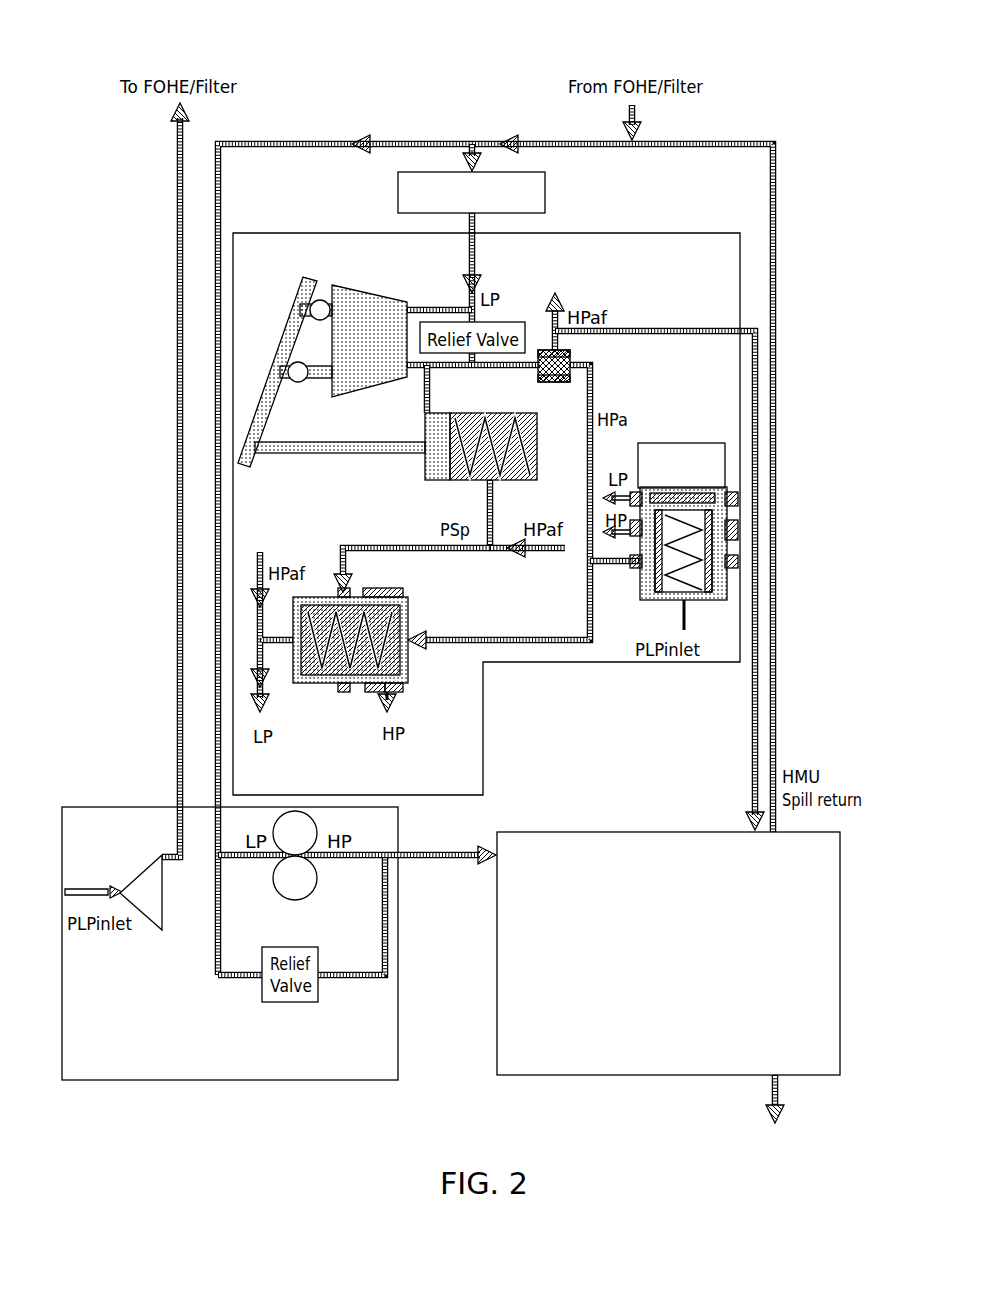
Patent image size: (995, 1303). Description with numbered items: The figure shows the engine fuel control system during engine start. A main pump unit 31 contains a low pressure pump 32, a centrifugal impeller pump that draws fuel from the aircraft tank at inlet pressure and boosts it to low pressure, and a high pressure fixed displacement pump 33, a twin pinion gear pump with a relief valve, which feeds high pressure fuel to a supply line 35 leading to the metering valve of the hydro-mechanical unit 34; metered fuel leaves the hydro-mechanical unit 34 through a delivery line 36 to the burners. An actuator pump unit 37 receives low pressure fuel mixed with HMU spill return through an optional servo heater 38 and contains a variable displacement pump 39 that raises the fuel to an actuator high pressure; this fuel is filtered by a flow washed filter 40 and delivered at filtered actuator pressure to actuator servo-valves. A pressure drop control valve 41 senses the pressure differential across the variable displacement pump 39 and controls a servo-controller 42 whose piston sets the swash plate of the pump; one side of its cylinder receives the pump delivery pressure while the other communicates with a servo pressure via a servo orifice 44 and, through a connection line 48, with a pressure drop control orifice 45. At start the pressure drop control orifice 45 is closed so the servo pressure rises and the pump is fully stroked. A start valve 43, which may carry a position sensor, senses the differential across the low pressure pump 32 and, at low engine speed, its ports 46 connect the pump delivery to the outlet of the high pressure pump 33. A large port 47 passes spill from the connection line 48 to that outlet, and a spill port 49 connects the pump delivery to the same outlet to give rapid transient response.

The main pump unit 31 is at (100, 805).
The low pressure pump 32 is at (162, 918).
The high pressure fixed displacement pump 33 is at (310, 897).
The hydro-mechanical unit 34 is at (600, 829).
The supply line 35 is at (415, 851).
The delivery line 36 is at (772, 1085).
The actuator pump unit 37 is at (645, 232).
The servo heater 38 is at (545, 184).
The variable displacement pump 39 is at (360, 284).
The flow washed filter 40 is at (553, 385).
The pressure drop control valve 41 is at (415, 616).
The servo-controller 42 is at (468, 412).
The start valve 43 is at (684, 441).
The servo orifice 44 is at (517, 556).
The pressure drop control orifice 45 is at (340, 693).
The ports 46 is at (635, 562).
The large port 47 is at (372, 693).
The connection line 48 is at (368, 546).
The spill port 49 is at (405, 692).